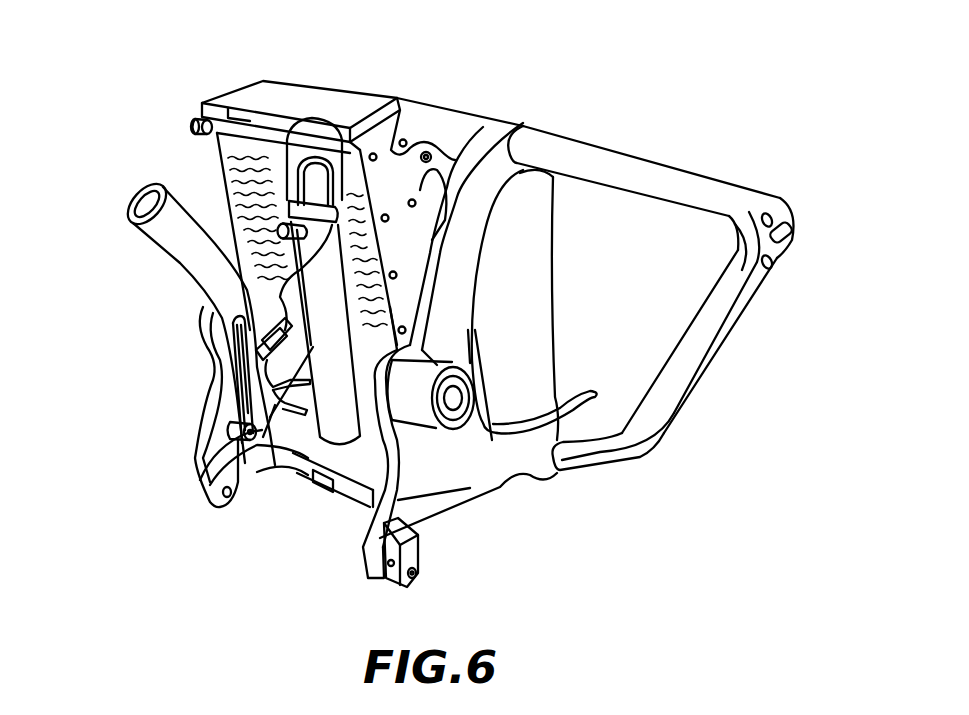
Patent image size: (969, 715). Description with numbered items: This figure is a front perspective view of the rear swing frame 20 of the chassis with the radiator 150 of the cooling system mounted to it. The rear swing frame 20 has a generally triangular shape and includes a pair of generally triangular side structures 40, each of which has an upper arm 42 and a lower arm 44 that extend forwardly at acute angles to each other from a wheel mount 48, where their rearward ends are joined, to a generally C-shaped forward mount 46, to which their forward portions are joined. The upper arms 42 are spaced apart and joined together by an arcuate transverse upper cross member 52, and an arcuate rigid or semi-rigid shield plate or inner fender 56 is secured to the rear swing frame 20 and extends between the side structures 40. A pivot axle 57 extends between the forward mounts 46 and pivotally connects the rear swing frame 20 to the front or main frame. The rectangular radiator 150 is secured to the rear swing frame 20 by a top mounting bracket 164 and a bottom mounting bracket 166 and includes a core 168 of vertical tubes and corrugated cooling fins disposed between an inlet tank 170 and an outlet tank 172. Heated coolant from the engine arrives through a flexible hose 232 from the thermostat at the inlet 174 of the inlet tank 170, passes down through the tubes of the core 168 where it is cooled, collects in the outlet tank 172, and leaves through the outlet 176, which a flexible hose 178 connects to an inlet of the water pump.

The rear swing frame 20 is at (623, 473).
The side structure 40 is at (711, 164).
The upper arm 42 is at (620, 163).
The lower arm 44 is at (683, 385).
The forward mount 46 is at (203, 447).
The wheel mount 48 is at (780, 210).
The upper cross member 52 is at (433, 118).
The inner fender 56 is at (510, 325).
The pivot axle 57 is at (420, 380).
The radiator 150 is at (193, 189).
The top mounting bracket 164 is at (243, 97).
The bottom mounting bracket 166 is at (333, 487).
The core 168 is at (248, 223).
The inlet tank 170 is at (400, 108).
The outlet tank 172 is at (370, 490).
The inlet 174 is at (317, 140).
The outlet 176 is at (268, 465).
The flexible hose 178 is at (210, 270).
The flexible hose 232 is at (197, 484).